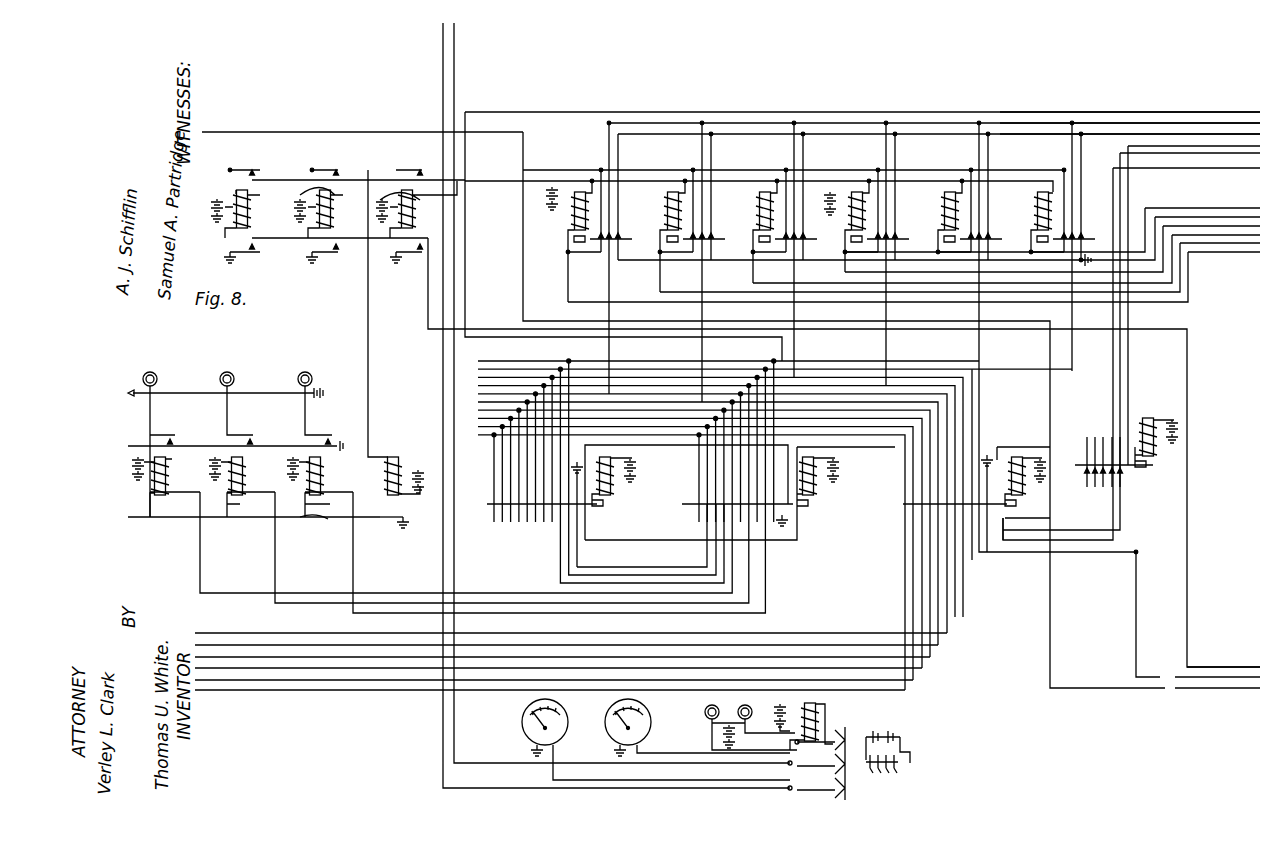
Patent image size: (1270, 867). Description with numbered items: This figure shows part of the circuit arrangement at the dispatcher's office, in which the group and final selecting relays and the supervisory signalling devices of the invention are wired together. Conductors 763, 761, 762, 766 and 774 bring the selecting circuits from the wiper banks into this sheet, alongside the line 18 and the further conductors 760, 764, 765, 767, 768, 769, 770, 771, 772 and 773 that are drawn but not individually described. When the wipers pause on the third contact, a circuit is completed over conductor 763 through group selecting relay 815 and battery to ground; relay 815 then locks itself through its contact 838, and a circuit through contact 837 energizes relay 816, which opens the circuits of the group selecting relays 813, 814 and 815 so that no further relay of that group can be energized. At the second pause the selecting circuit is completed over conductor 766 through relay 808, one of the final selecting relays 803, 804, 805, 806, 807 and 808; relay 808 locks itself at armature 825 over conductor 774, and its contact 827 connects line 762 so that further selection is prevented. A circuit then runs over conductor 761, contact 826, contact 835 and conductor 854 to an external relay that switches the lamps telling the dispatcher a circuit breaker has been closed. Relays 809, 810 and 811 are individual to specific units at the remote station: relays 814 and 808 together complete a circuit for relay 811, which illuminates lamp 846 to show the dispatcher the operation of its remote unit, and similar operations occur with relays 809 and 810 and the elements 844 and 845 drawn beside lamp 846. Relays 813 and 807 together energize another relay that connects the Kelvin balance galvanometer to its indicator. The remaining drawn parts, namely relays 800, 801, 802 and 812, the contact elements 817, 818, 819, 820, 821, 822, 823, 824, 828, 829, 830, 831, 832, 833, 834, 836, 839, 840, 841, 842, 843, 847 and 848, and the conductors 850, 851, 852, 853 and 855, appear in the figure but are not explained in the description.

The line conductor 18 is at (208, 132).
The conductor 760 is at (1236, 112).
The conductor 761 is at (1218, 123).
The line 762 is at (1200, 134).
The conductor 763 is at (1120, 158).
The conductor 764 is at (1230, 160).
The conductor 765 is at (1215, 172).
The conductor 766 is at (1150, 215).
The conductor 767 is at (1188, 218).
The conductor 768 is at (1225, 228).
The conductor 769 is at (1205, 236).
The conductor 770 is at (1243, 244).
The conductor 771 is at (914, 277).
The conductor 772 is at (1243, 667).
The conductor 773 is at (1233, 677).
The conductor 774 is at (1212, 688).
The relay 800 is at (234, 192).
The relay 801 is at (302, 213).
The relay 802 is at (399, 209).
The final selecting relay 803 is at (572, 220).
The final selecting relay 804 is at (672, 195).
The final selecting relay 805 is at (760, 220).
The final selecting relay 806 is at (858, 253).
The final selecting relay 807 is at (945, 194).
The final selecting relay 808 is at (1040, 194).
The relay 809 is at (268, 492).
The relay 810 is at (244, 487).
The relay 811 is at (323, 487).
The relay 812 is at (390, 455).
The group selecting relay 813 is at (613, 484).
The group selecting relay 814 is at (820, 460).
The group selecting relay 815 is at (1020, 456).
The relay 816 is at (1148, 466).
The contacts 817 is at (410, 166).
The contacts 818 is at (394, 262).
The conductor 819 is at (860, 259).
The contact 820 is at (888, 238).
The contact 821 is at (895, 245).
The conductor 822 is at (940, 254).
The contact 823 is at (988, 236).
The contact 824 is at (990, 245).
The armature 825 is at (1068, 238).
The contact 826 is at (1074, 238).
The contact 827 is at (1080, 238).
The contact bank 828 is at (555, 505).
The contact bar 829 is at (560, 506).
The armature 830 is at (580, 508).
The contact 831 is at (605, 508).
The contact bank 832 is at (765, 530).
The contact 833 is at (805, 488).
The armature 834 is at (802, 506).
The contact 835 is at (968, 508).
The conductor 836 is at (975, 508).
The contact 837 is at (988, 508).
The contact 838 is at (1012, 504).
The contact bank 839 is at (1103, 490).
The contact 840 is at (1118, 470).
The contact 841 is at (1128, 470).
The contact 842 is at (903, 503).
The contact bar 843 is at (898, 508).
The lamp 844 is at (155, 372).
The lamp 845 is at (235, 364).
The lamp 846 is at (308, 372).
The contact 847 is at (317, 435).
The contact 848 is at (318, 520).
The conductor 850 is at (242, 629).
The conductor 851 is at (248, 645).
The conductor 852 is at (275, 657).
The conductor 853 is at (242, 668).
The conductor 854 is at (278, 680).
The conductor 855 is at (357, 700).